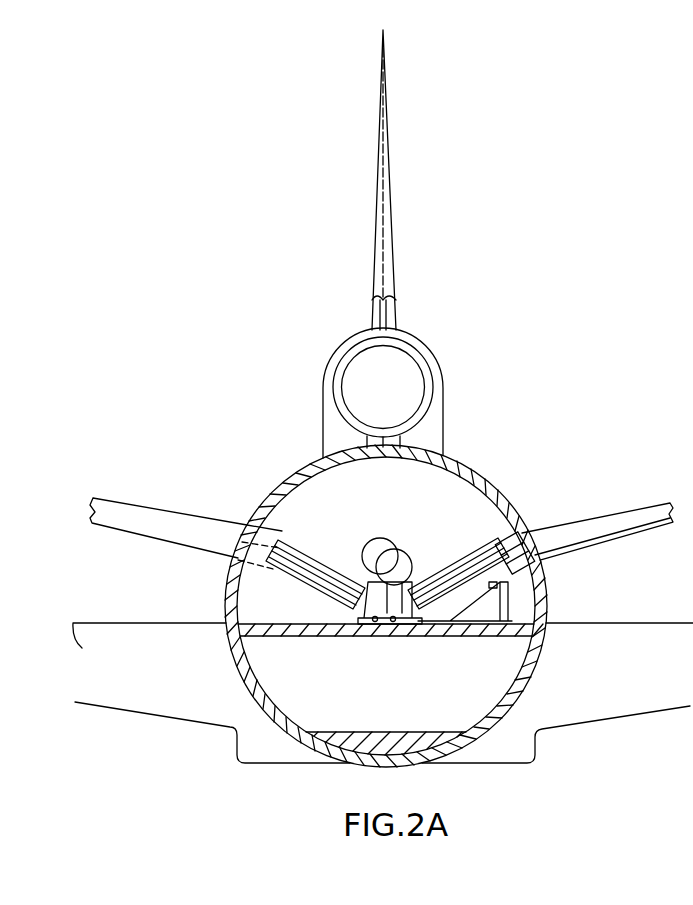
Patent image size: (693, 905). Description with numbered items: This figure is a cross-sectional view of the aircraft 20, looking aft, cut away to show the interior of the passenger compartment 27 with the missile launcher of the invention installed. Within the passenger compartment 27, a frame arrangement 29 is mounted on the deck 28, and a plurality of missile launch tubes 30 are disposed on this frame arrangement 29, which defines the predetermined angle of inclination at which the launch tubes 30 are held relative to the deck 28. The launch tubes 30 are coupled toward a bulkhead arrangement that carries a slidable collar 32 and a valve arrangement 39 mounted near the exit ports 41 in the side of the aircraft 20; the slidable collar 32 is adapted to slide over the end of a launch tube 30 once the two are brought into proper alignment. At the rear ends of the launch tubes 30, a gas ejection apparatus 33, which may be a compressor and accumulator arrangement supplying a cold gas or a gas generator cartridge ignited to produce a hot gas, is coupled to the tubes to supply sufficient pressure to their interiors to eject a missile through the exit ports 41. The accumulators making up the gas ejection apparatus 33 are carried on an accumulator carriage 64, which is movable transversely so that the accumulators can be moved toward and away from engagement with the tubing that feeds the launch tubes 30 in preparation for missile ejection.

The aircraft 20 is at (473, 463).
The passenger compartment 27 is at (386, 606).
The deck 28 is at (302, 624).
The frame arrangement 29 is at (470, 637).
The missile launch tubes 30 is at (300, 565).
The slidable collar 32 is at (513, 594).
The gas ejection apparatus 33 is at (394, 549).
The valve arrangement 39 is at (505, 540).
The exit ports 41 is at (533, 545).
The accumulator carriage 64 is at (386, 637).